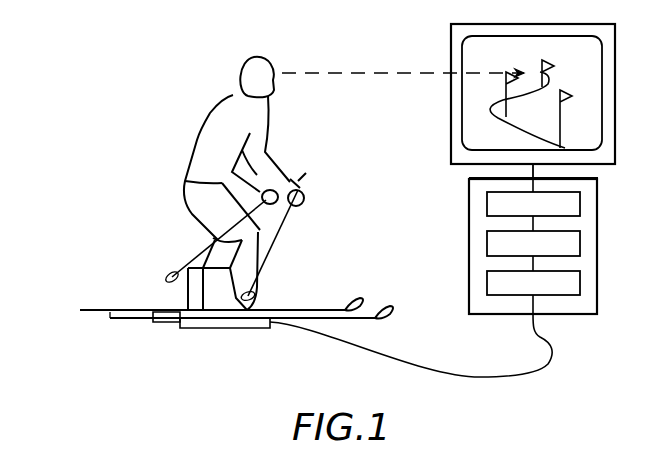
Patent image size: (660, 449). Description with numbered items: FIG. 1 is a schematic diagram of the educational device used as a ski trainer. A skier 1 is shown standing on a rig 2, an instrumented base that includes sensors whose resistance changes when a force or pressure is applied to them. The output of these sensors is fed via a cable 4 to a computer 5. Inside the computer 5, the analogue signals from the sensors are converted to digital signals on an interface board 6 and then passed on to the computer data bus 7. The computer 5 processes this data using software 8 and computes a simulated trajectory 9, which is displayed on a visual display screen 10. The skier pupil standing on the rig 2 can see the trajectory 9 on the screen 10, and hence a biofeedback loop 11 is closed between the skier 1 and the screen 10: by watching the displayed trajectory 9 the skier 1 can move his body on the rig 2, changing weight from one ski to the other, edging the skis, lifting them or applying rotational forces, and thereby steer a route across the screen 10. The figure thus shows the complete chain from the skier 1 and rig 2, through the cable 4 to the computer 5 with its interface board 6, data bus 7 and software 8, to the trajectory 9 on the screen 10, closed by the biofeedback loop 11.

The skier 1 is at (222, 126).
The rig 2 is at (225, 322).
The cable 4 is at (540, 372).
The computer 5 is at (546, 268).
The interface board 6 is at (568, 286).
The computer data bus 7 is at (568, 246).
The software 8 is at (566, 203).
The simulated trajectory 9 is at (538, 86).
The visual display screen 10 is at (592, 121).
The biofeedback loop 11 is at (370, 72).